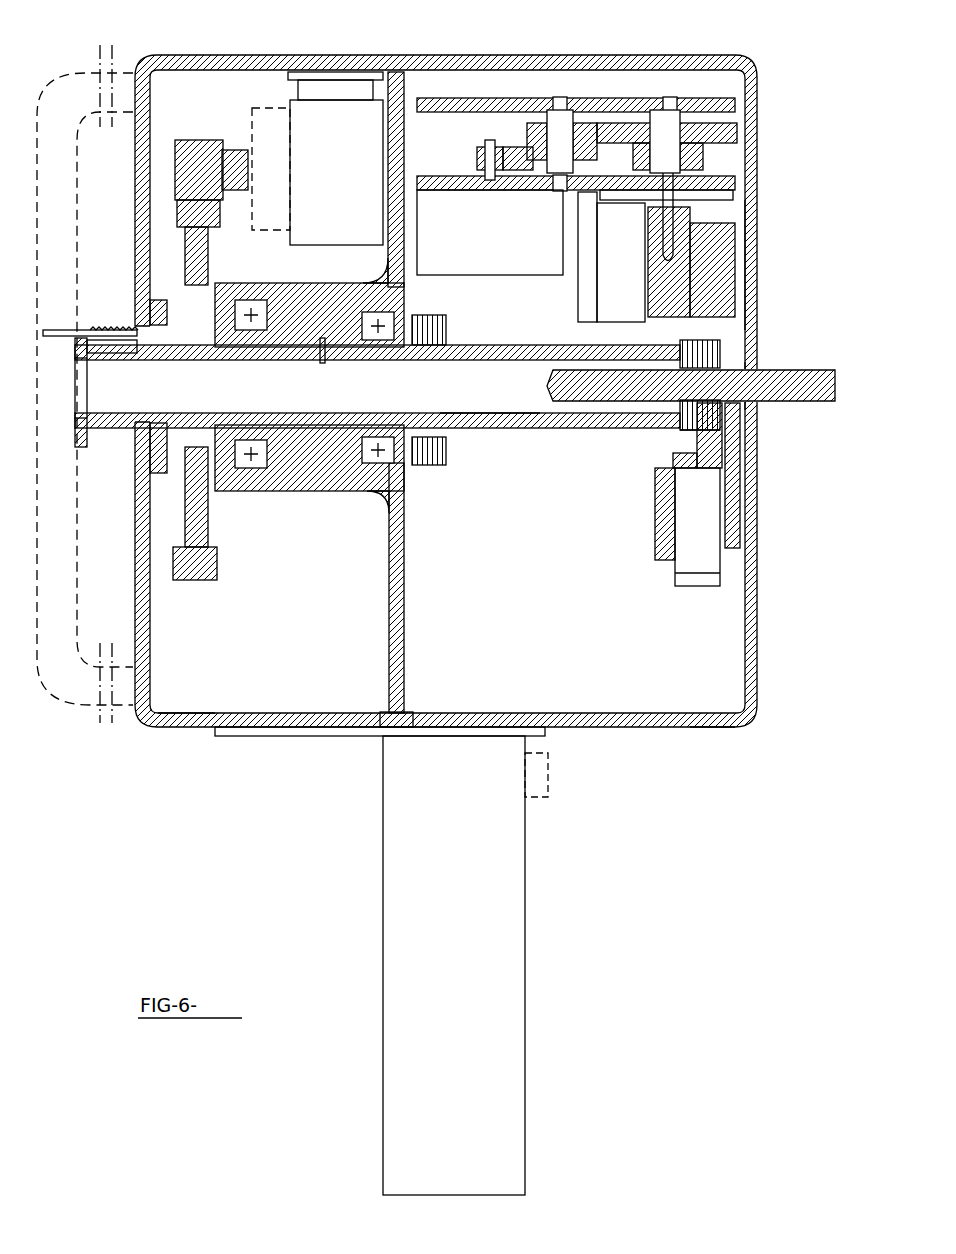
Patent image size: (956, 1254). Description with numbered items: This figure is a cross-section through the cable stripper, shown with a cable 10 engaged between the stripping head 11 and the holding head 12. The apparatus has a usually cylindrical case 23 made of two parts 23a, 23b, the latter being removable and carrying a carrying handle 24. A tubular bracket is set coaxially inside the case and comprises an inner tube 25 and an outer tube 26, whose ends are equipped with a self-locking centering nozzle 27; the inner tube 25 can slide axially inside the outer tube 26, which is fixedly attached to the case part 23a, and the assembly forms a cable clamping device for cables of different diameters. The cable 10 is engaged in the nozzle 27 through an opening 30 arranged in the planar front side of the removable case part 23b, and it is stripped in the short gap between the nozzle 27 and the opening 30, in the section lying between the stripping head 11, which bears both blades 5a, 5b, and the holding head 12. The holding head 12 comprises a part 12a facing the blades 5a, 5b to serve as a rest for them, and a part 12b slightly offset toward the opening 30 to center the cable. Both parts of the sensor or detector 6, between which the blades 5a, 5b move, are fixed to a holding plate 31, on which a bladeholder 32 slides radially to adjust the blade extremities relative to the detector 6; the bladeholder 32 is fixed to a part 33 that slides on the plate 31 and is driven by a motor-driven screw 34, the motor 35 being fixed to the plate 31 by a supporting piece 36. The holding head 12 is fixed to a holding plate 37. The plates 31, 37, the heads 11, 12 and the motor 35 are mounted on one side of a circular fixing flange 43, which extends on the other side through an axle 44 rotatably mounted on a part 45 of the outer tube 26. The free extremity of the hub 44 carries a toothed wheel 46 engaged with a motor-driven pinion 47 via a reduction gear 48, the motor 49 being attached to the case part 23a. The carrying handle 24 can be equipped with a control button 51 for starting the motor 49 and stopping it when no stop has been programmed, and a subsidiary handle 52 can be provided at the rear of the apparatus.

The blade 5a is at (710, 332).
The blade 5b is at (757, 354).
The sensor or detector 6 is at (720, 358).
The cable 10 is at (788, 408).
The stripping head 11 is at (742, 288).
The holding head 12 is at (747, 495).
The part of holding head 12a is at (697, 410).
The part of holding head 12b is at (717, 467).
The case 23 is at (152, 740).
The case part 23a is at (188, 727).
The removable case part 23b is at (705, 730).
The carrying handle 24 is at (373, 975).
The inner tube 25 is at (123, 432).
The outer tube 26 is at (490, 427).
The self-locking centering nozzle 27 is at (672, 437).
The opening 30 is at (760, 405).
The holding plate 31 is at (622, 247).
The bladeholder 32 is at (733, 290).
The sliding part 33 is at (672, 293).
The motor-driven screw 34 is at (683, 200).
The motor 35 is at (493, 223).
The supporting piece 36 is at (583, 283).
The holding plate 37 is at (717, 557).
The circular fixing flange 43 is at (397, 683).
The axle or hub 44 is at (240, 487).
The part of tube 45 is at (310, 437).
The toothed wheel 46 is at (190, 250).
The motor-driven pinion 47 is at (192, 145).
The reduction gear 48 is at (267, 160).
The motor 49 is at (343, 165).
The control button 51 is at (553, 789).
The subsidiary handle 52 is at (83, 557).